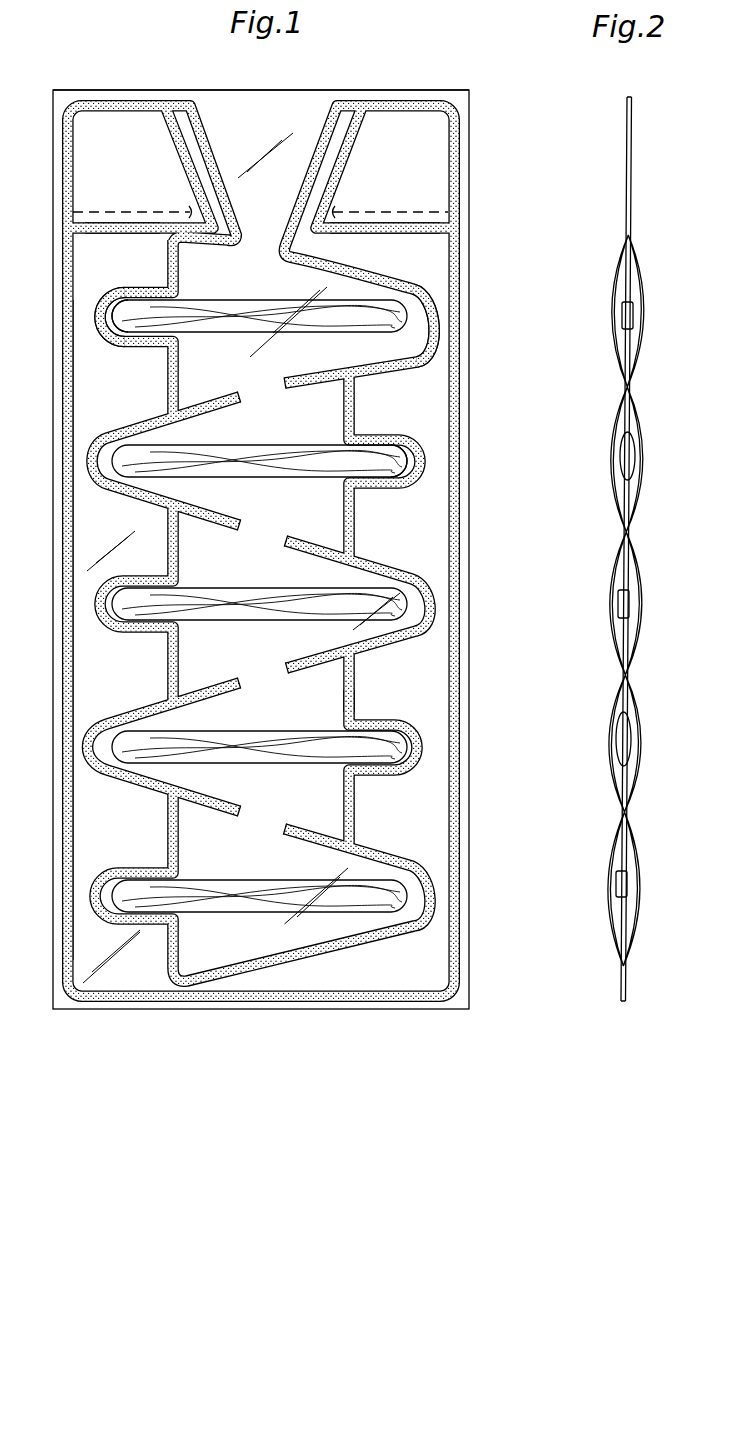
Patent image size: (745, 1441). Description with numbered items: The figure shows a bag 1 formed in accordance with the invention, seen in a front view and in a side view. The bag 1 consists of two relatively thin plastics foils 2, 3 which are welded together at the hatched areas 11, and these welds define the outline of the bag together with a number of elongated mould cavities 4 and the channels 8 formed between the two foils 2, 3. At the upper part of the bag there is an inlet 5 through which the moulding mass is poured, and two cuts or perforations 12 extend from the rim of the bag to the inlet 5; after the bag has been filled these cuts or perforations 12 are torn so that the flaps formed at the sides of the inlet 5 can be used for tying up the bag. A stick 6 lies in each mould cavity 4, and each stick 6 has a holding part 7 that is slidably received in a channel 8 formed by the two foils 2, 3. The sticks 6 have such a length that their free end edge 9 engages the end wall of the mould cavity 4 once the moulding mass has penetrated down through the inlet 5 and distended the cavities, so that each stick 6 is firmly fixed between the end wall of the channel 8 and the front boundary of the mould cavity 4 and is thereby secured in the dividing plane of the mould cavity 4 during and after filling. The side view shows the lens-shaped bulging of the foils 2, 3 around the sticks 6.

In FIG. 1, the bag 1 is at (472, 128).
In FIG. 1, the inlet 5 is at (245, 105).
In FIG. 1, the cuts or perforations 12 is at (137, 212).
In FIG. 1, the channels 8 is at (118, 316).
In FIG. 1, the free end edge 9 is at (412, 318).
In FIG. 1, the sticks 6 is at (266, 312).
In FIG. 2, the sticks 6 is at (622, 313).
In FIG. 1, the holding part 7 is at (128, 317).
In FIG. 1, the mould cavity 4 is at (313, 707).
In FIG. 1, the hatched areas 11 is at (65, 944).
In FIG. 2, the plastics foil 2 is at (640, 284).
In FIG. 2, the plastics foil 3 is at (613, 717).